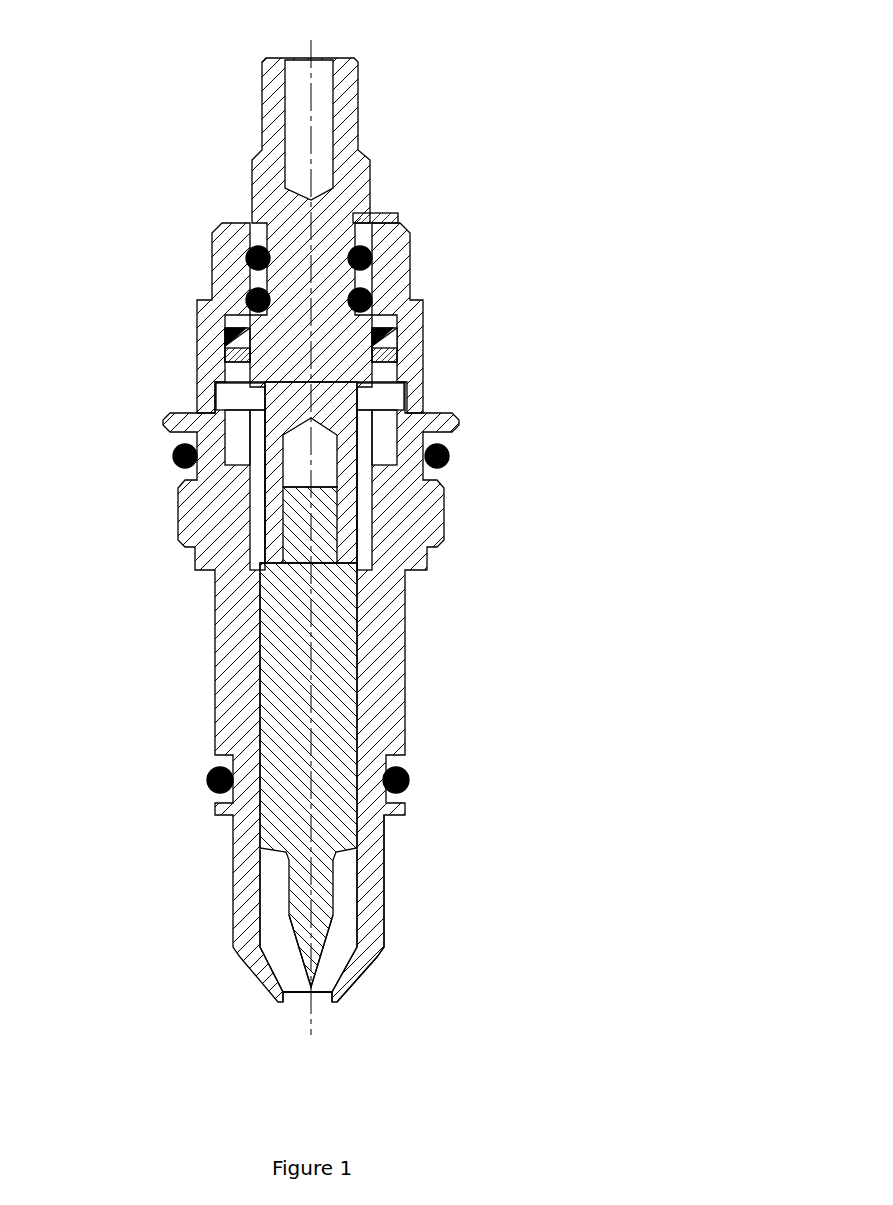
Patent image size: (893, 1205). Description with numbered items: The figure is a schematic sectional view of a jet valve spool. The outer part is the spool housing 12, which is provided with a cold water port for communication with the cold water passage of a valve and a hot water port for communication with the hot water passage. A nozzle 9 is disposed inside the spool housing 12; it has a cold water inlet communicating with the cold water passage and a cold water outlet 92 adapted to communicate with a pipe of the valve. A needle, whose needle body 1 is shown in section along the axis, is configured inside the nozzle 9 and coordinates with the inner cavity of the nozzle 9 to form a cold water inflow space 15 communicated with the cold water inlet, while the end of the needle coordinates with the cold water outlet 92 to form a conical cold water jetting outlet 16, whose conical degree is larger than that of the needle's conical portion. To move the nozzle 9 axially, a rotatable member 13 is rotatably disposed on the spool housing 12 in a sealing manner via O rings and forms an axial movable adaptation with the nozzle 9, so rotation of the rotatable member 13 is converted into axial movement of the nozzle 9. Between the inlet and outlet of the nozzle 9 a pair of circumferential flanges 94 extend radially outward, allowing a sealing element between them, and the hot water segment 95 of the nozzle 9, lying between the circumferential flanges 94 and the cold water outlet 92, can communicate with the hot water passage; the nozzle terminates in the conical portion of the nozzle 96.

The needle body 1 is at (298, 708).
The nozzle 9 is at (380, 715).
The spool housing 12 is at (412, 370).
The rotatable member 13 is at (297, 227).
The cold water inflow space 15 is at (273, 915).
The cold water jetting outlet 16 is at (293, 973).
The cold water outlet of the nozzle 92 is at (293, 993).
The circumferential flange 94 is at (233, 813).
The hot water segment 95 is at (383, 887).
The conical portion of the nozzle 96 is at (262, 988).